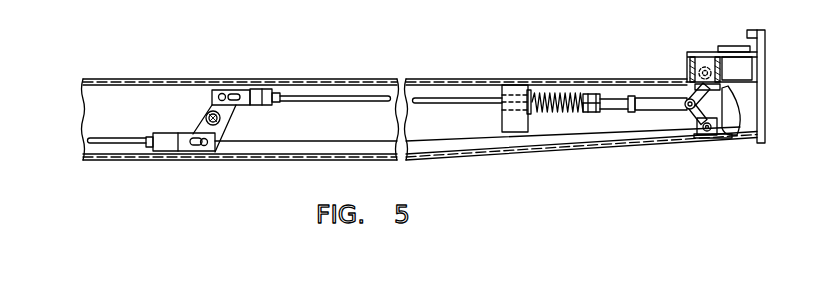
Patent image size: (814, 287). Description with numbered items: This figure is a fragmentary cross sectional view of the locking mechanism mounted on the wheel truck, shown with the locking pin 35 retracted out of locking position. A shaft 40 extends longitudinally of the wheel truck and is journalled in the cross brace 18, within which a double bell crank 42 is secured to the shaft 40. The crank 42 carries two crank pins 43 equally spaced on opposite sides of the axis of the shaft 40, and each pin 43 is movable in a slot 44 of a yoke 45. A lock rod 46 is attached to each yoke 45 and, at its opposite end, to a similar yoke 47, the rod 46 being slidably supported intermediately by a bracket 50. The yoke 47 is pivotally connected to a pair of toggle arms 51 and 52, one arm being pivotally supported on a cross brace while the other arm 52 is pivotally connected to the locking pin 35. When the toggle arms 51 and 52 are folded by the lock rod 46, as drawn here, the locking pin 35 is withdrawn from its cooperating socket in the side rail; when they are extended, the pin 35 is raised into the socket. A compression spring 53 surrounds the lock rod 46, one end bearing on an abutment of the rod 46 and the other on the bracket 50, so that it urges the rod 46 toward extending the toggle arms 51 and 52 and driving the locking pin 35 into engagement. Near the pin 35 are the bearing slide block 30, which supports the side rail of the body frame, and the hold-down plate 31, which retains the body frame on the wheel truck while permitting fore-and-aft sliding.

The cross brace 18 is at (538, 151).
The bearing slide block 30 is at (734, 46).
The hold-down plate 31 is at (764, 47).
The locking pin 35 is at (697, 73).
The shaft 40 is at (205, 117).
The double bell crank 42 is at (230, 112).
The crank pin 43 is at (222, 93).
The slot 44 is at (236, 92).
The yoke 45 is at (265, 92).
The lock rod 46 is at (114, 133).
The yoke 47 is at (647, 112).
The bracket 50 is at (502, 117).
The toggle arm 51 is at (738, 117).
The toggle arm 52 is at (718, 92).
The compression spring 53 is at (555, 93).